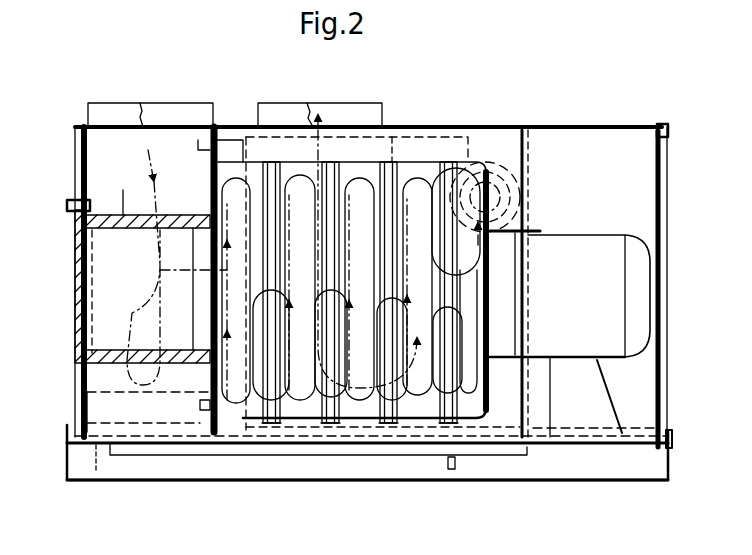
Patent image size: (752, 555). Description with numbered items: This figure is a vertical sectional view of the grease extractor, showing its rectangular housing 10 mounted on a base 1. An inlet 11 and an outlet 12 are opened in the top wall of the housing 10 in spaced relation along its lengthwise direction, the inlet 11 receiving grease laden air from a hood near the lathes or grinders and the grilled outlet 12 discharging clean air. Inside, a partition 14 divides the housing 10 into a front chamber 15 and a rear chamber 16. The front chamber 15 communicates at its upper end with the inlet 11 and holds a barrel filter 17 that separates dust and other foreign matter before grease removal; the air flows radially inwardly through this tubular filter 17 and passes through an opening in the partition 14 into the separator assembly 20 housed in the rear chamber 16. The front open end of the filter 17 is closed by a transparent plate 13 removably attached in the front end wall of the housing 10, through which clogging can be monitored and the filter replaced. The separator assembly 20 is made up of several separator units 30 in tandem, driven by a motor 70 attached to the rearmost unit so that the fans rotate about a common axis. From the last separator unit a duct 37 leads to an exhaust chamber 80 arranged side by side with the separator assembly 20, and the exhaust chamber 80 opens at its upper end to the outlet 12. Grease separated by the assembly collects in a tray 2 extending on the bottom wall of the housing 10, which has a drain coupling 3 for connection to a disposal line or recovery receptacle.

The base 1 is at (240, 481).
The tray 2 is at (375, 453).
The drain coupling 3 is at (453, 469).
The housing 10 is at (669, 128).
The inlet 11 is at (103, 108).
The outlet 12 is at (280, 110).
The transparent plate 13 is at (75, 279).
The partition 14 is at (198, 140).
The front chamber 15 is at (108, 162).
The rear chamber 16 is at (587, 162).
The barrel filter 17 is at (123, 190).
The separator assembly 20 is at (414, 160).
The separator units 30 is at (225, 407).
The duct 37 is at (497, 165).
The motor 70 is at (593, 250).
The exhaust chamber 80 is at (528, 157).